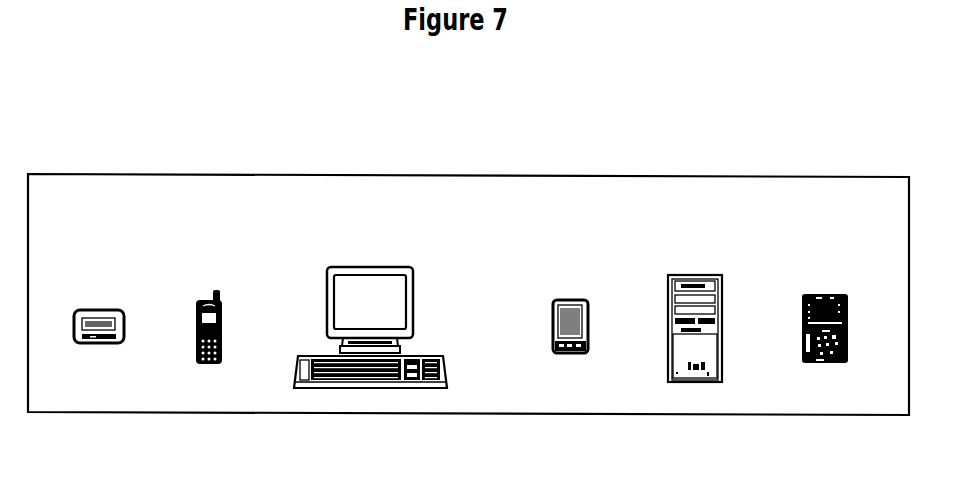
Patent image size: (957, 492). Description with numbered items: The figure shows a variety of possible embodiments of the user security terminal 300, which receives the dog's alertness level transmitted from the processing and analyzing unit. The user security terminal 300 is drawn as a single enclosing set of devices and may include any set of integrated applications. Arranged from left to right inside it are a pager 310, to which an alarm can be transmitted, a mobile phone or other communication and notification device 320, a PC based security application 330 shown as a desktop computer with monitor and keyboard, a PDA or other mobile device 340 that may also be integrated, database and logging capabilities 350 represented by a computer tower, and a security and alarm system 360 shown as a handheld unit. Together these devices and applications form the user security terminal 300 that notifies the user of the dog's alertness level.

The user security terminal 300 is at (140, 166).
The pager 310 is at (120, 326).
The mobile phone or other communication and notification device 320 is at (230, 327).
The PC based security application 330 is at (391, 327).
The PDA and mobile device 340 is at (591, 326).
The database and logging capabilities 350 is at (716, 328).
The security and alarm system 360 is at (846, 328).